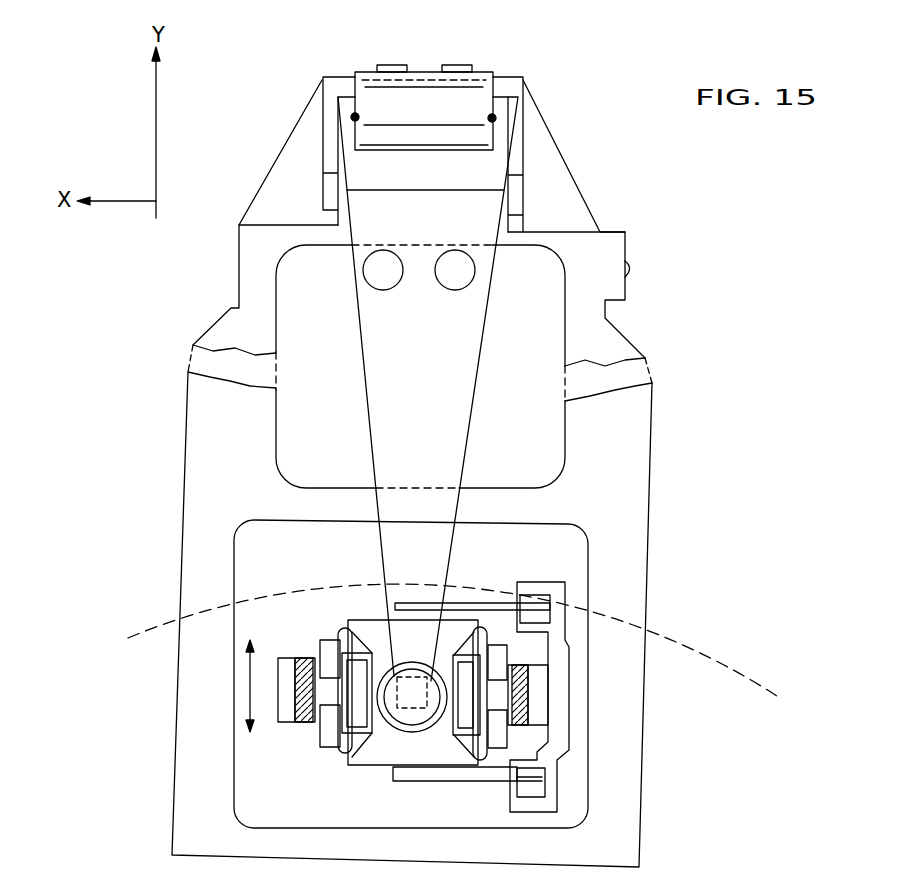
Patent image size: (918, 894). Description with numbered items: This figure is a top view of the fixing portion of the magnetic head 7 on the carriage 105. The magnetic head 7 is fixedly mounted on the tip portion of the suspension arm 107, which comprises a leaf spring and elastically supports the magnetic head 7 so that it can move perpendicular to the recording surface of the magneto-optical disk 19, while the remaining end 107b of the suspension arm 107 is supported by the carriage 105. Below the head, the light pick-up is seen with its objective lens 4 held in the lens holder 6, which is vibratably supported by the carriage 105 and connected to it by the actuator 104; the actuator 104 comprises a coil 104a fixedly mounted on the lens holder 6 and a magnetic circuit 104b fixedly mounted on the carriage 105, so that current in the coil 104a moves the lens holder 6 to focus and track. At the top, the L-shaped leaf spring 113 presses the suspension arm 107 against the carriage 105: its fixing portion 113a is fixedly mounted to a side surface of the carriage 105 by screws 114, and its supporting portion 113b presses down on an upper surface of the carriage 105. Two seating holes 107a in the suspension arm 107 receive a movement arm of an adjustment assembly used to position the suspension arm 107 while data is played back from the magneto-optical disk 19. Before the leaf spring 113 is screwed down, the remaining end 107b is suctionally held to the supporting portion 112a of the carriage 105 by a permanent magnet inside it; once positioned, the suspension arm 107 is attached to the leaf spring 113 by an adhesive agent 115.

The objective lens 4 is at (413, 717).
The lens holder 6 is at (372, 756).
The magnetic head 7 is at (412, 677).
The magneto-optical disk 19 is at (168, 624).
The actuator 104 is at (88, 737).
The coil 104a is at (327, 738).
The magnetic circuit 104b is at (285, 712).
The carriage 105 is at (616, 506).
The suspension arm 107 is at (456, 350).
The seating holes 107a is at (455, 280).
The remaining end of the suspension arm 107b is at (352, 162).
The supporting portion 112a is at (513, 150).
The leaf spring 113 is at (386, 104).
The fixing portion 113a is at (478, 76).
The supporting portion 113b is at (477, 107).
The screws 114 is at (452, 64).
The adhesive agent 115 is at (340, 102).